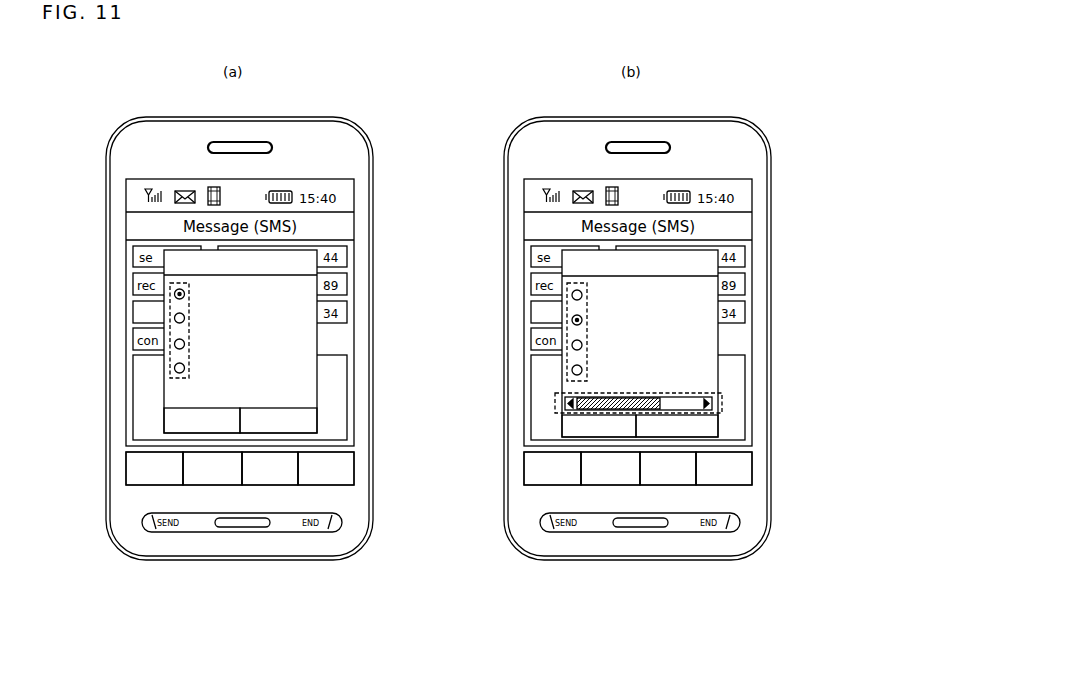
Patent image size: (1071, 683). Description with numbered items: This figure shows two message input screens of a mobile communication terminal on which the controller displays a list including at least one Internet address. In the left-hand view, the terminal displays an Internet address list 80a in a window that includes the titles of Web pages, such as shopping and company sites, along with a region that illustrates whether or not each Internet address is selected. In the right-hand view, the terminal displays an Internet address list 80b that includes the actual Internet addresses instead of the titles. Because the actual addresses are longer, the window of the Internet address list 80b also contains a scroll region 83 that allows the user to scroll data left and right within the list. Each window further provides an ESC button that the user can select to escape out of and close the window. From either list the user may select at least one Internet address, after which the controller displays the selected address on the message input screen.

The Internet address list 80a is at (317, 337).
The Internet address list 80b is at (718, 338).
The scroll region 83 is at (722, 400).